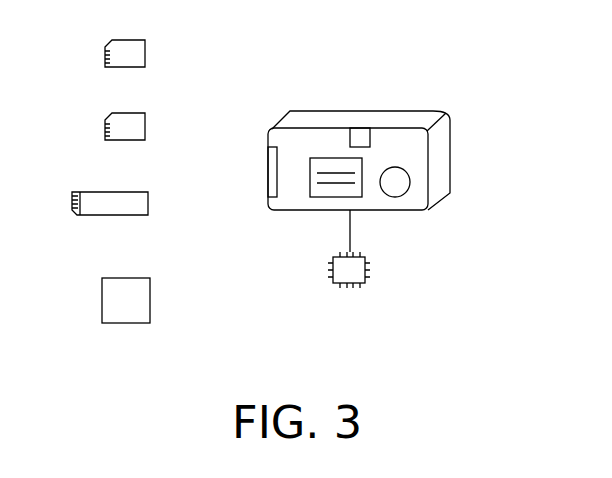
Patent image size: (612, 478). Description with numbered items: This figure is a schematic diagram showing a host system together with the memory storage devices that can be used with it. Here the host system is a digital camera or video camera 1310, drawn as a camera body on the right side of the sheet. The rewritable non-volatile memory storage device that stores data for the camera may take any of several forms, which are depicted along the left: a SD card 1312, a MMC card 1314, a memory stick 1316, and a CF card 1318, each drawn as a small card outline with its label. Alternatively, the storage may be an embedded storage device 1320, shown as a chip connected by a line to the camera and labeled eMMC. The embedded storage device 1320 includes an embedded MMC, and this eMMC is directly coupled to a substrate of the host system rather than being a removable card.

The digital camera (video camera) 1310 is at (450, 148).
The SD card 1312 is at (146, 44).
The MMC card 1314 is at (146, 117).
The memory stick 1316 is at (149, 203).
The CF card 1318 is at (151, 293).
The embedded storage device 1320 is at (370, 270).